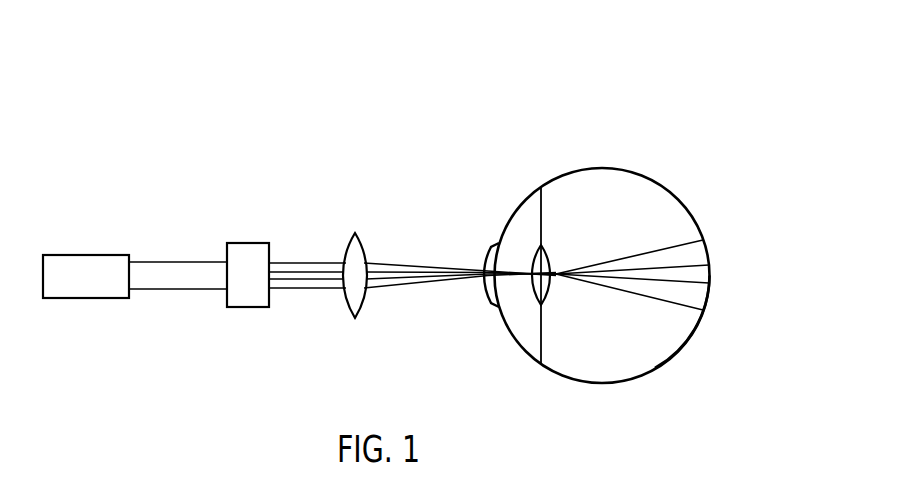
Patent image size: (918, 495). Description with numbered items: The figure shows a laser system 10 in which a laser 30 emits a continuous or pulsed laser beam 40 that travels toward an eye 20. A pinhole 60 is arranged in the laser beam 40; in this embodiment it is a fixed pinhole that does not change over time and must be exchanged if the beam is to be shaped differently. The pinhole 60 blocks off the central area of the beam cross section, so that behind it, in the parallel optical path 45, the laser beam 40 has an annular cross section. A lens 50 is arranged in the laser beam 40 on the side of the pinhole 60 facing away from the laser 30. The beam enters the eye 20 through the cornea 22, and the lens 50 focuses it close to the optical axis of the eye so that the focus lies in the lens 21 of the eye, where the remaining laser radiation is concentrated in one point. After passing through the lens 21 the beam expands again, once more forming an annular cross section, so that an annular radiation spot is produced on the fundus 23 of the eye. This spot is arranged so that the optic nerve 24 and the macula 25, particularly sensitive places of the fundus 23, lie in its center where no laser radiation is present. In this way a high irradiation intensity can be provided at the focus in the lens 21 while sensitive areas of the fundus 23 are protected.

The laser system 10 is at (323, 153).
The eye 20 is at (675, 190).
The lens 21 is at (538, 260).
The cornea 22 is at (493, 243).
The fundus of the eye 23 is at (655, 368).
The optic nerve 24 is at (712, 272).
The macula 25 is at (712, 278).
The laser 30 is at (110, 265).
The laser beam 40 is at (185, 270).
The parallel optical path 45 is at (313, 288).
The lens 50 is at (367, 255).
The pinhole 60 is at (257, 252).